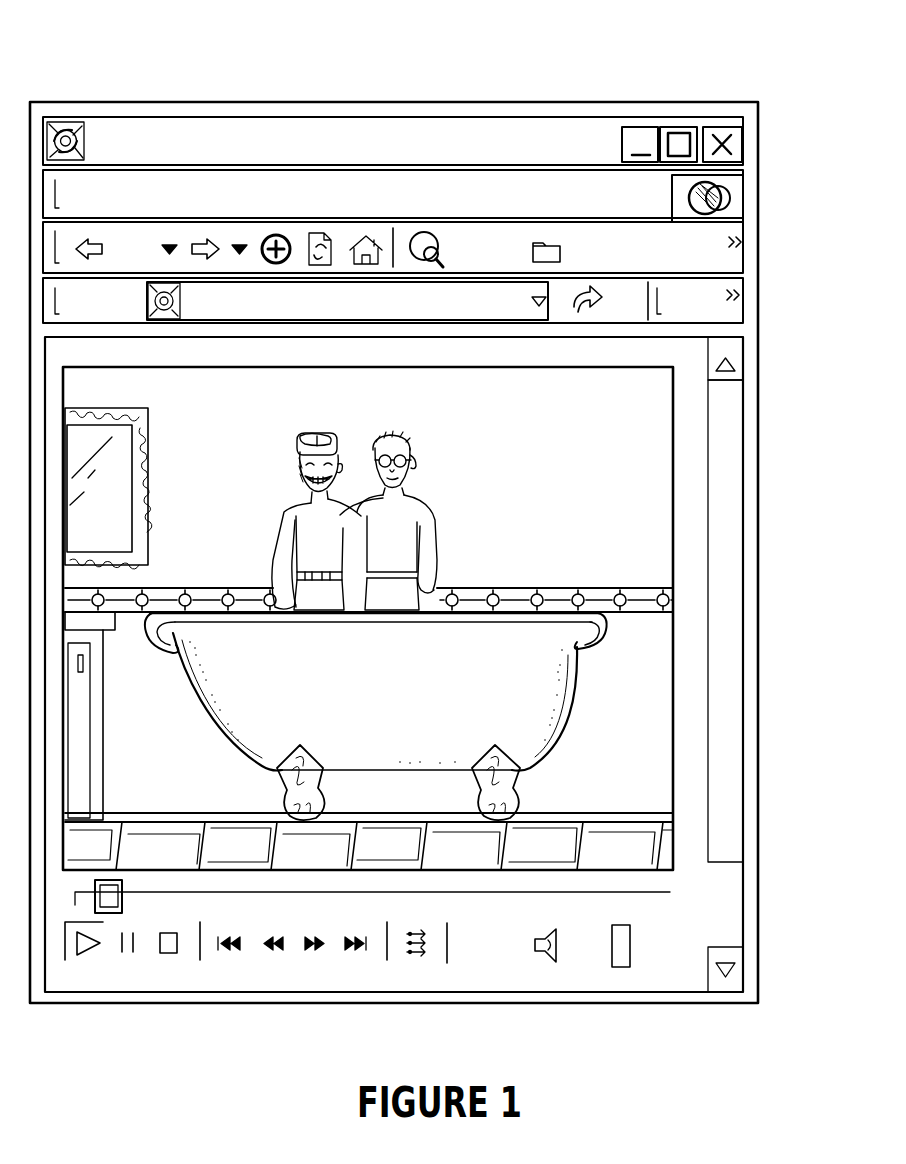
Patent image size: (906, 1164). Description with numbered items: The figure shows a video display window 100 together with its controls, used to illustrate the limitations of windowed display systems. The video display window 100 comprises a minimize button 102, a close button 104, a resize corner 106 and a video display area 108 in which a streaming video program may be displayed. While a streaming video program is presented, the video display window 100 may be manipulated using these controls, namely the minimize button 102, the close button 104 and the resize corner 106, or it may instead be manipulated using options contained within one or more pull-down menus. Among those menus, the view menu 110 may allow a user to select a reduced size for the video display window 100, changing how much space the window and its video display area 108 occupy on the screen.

The video display window 100 is at (87, 93).
The minimize button 102 is at (622, 142).
The close button 104 is at (708, 128).
The resize corner 106 is at (755, 1003).
The video display area 108 is at (647, 638).
The view menu 110 is at (247, 193).